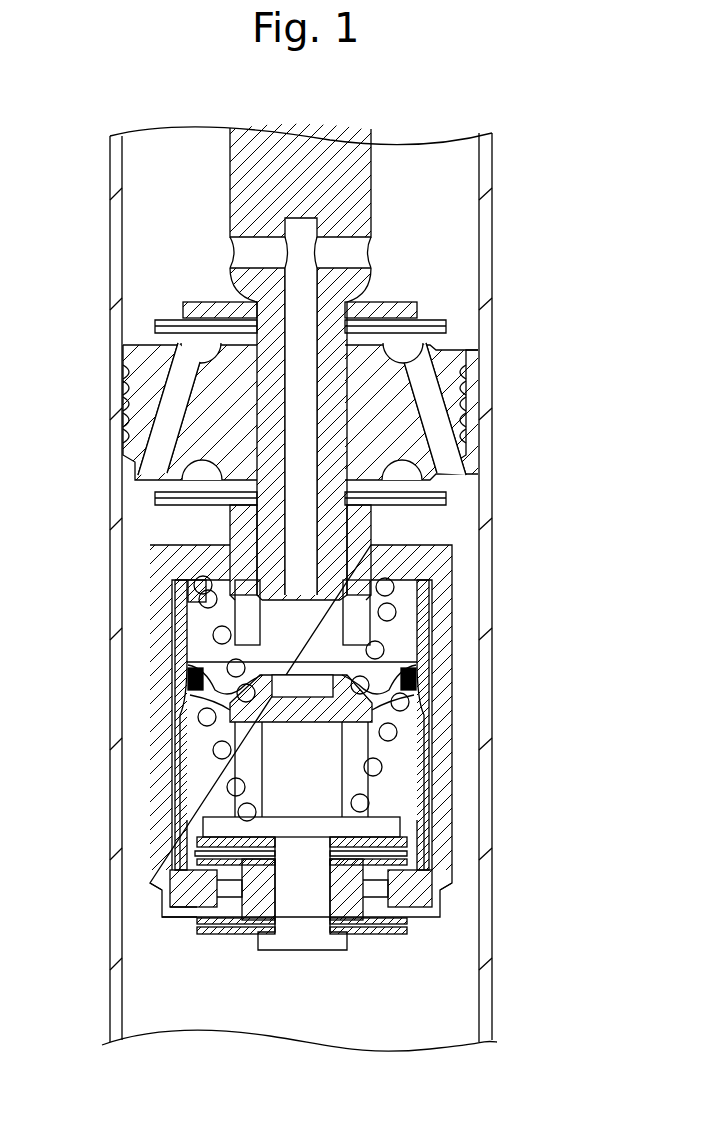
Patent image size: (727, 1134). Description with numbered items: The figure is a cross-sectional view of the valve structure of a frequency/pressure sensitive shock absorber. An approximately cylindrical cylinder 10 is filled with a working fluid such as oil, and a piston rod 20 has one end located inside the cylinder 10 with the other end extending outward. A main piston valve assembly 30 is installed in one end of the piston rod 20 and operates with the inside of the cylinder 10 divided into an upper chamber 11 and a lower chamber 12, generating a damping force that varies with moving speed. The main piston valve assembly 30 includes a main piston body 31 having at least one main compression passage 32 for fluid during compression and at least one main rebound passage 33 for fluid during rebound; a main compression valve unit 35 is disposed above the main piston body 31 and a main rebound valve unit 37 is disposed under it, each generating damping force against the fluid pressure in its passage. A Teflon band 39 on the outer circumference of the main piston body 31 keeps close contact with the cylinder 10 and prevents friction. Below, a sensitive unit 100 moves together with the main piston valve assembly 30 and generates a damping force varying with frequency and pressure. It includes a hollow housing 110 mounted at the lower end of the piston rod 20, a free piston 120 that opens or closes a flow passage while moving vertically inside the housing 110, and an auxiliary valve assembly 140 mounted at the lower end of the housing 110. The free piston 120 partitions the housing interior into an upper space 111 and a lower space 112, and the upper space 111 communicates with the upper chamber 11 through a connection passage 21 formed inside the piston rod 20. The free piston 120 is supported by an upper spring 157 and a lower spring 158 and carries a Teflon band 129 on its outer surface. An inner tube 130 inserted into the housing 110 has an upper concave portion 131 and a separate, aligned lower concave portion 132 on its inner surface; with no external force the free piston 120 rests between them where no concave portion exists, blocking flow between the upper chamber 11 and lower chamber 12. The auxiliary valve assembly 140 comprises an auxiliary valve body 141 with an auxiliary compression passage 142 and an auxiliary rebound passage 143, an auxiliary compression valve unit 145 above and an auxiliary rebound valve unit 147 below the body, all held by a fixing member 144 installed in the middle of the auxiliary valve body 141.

The cylinder 10 is at (492, 160).
The upper chamber 11 is at (424, 200).
The lower chamber 12 is at (225, 1004).
The piston rod 20 is at (230, 160).
The connection passage 21 is at (302, 296).
The main piston valve assembly 30 is at (321, 411).
The main piston body 31 is at (514, 371).
The main compression passage 32 is at (150, 428).
The main rebound passage 33 is at (445, 370).
The main compression valve unit 35 is at (440, 318).
The main rebound valve unit 37 is at (155, 500).
The Teflon band 39 is at (127, 450).
The sensitive unit 100 is at (517, 700).
The housing 110 is at (450, 570).
The upper space 111 is at (303, 632).
The lower space 112 is at (303, 757).
The free piston 120 is at (375, 705).
The Teflon band 129 is at (215, 633).
The inner tube 130 is at (185, 680).
The upper concave portion 131 is at (205, 596).
The lower concave portion 132 is at (222, 765).
The auxiliary valve assembly 140 is at (303, 940).
The auxiliary valve body 141 is at (412, 915).
The auxiliary compression passage 142 is at (178, 897).
The auxiliary rebound passage 143 is at (430, 897).
The fixing member 144 is at (303, 945).
The auxiliary compression valve unit 145 is at (218, 835).
The auxiliary rebound valve unit 147 is at (203, 935).
The upper spring 157 is at (220, 607).
The lower spring 158 is at (222, 735).